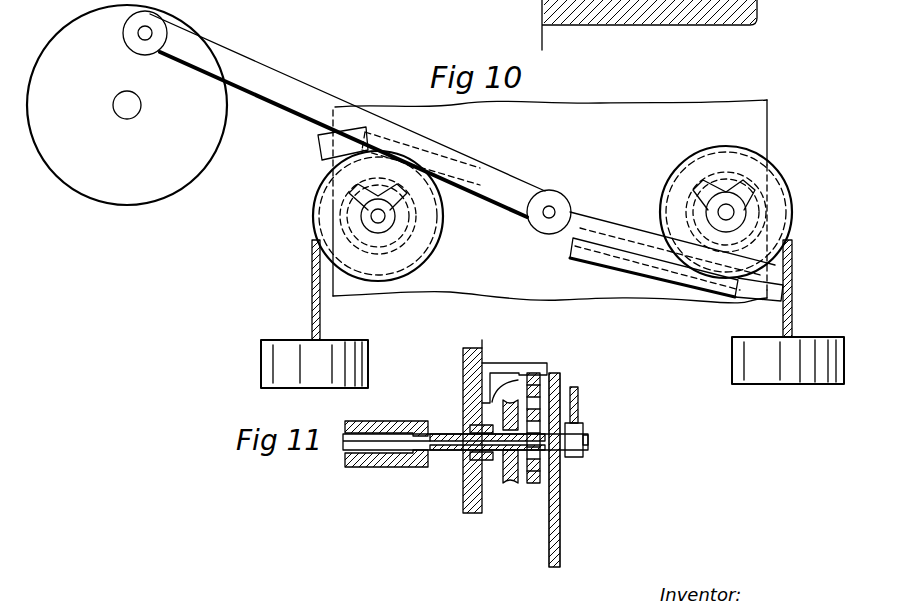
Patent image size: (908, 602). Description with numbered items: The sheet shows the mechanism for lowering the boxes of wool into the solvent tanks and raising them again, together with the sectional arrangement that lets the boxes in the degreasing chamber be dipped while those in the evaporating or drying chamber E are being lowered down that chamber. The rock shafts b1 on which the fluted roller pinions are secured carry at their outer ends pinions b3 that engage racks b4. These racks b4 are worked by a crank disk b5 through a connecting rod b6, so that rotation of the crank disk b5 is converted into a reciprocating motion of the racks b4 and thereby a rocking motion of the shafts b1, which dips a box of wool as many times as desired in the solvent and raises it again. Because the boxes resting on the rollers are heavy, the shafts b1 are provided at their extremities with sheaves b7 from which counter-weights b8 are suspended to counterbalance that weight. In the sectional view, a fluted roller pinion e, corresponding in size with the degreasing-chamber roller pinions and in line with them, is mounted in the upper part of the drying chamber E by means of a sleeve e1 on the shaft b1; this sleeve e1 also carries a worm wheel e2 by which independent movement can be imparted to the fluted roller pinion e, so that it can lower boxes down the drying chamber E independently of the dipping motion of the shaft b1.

In FIG. 10, the evaporating or drying chamber E is at (550, 201).
In FIG. 10, the crank disk b5 is at (127, 105).
In FIG. 10, the connecting rod b6 is at (250, 80).
In FIG. 10, the rack b4 is at (806, 272).
In FIG. 10, the sheave b7 is at (385, 273).
In FIG. 11, the sheave b7 is at (562, 492).
In FIG. 10, the pinion b3 is at (342, 227).
In FIG. 11, the pinion b3 is at (532, 488).
In FIG. 10, the rock shaft b1 is at (387, 218).
In FIG. 11, the rock shaft b1 is at (343, 447).
In FIG. 10, the counter-weight b8 is at (552, 314).
In FIG. 11, the fluted roller pinion e is at (404, 466).
In FIG. 11, the sleeve e1 is at (443, 433).
In FIG. 11, the worm wheel e2 is at (513, 478).